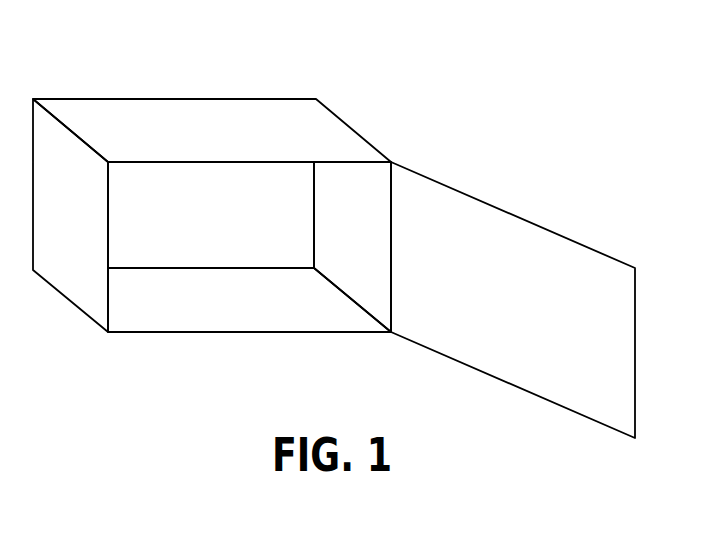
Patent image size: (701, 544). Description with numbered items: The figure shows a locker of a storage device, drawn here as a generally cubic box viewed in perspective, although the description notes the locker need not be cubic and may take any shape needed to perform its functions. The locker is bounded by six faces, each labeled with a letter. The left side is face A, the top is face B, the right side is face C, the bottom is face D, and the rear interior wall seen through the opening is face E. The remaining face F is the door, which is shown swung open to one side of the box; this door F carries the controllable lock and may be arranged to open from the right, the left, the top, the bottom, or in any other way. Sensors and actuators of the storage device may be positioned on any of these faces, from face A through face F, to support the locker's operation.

The locker face A is at (70, 215).
The locker face B is at (212, 130).
The locker face C is at (352, 247).
The locker face D is at (249, 300).
The locker face E is at (211, 215).
The door F is at (513, 300).